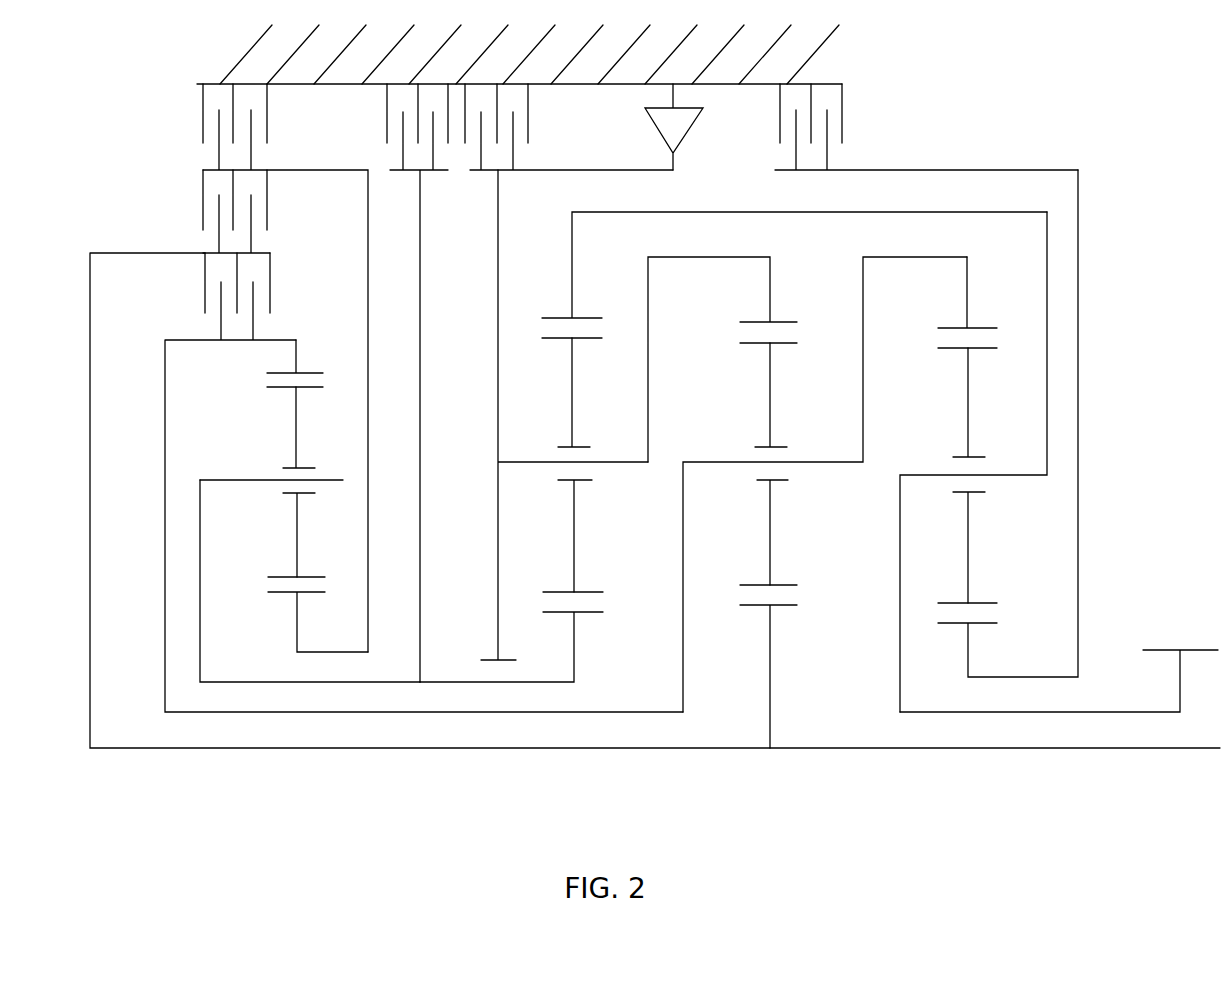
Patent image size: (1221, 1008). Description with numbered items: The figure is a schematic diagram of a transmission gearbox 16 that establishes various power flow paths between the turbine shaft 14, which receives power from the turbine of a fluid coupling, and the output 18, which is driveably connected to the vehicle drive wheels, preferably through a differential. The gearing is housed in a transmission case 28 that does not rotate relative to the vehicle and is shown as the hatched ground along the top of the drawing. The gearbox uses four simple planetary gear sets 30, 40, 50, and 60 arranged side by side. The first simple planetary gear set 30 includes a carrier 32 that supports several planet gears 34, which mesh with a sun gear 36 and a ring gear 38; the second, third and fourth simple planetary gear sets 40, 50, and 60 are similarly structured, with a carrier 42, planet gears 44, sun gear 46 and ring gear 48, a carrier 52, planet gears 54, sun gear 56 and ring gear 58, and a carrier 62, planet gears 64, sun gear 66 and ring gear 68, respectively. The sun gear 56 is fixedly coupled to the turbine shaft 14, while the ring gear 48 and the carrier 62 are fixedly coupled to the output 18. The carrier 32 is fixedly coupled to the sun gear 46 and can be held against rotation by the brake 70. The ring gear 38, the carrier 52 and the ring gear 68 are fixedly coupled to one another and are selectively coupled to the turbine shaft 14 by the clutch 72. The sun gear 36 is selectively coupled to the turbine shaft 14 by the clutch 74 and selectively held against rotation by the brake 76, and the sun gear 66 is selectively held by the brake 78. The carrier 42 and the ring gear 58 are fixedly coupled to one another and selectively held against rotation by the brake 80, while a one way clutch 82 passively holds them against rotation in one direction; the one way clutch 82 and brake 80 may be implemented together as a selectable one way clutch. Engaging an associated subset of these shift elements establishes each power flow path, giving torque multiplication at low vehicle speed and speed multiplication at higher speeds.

The turbine shaft 14 is at (1087, 748).
The gearbox 16 is at (1088, 110).
The output 18 is at (1160, 650).
The transmission case 28 is at (830, 35).
The simple planetary gear set 30 is at (302, 513).
The carrier 32 is at (198, 493).
The planet gears 34 is at (297, 440).
The sun gear 36 is at (298, 618).
The ring gear 38 is at (297, 358).
The simple planetary gear set 40 is at (733, 488).
The carrier 42 is at (496, 366).
The planet gears 44 is at (577, 397).
The sun gear 46 is at (580, 648).
The ring gear 48 is at (572, 266).
The simple planetary gear set 50 is at (807, 516).
The carrier 52 is at (863, 303).
The planet gears 54 is at (773, 413).
The sun gear 56 is at (770, 657).
The ring gear 58 is at (770, 292).
The simple planetary gear set 60 is at (961, 485).
The carrier 62 is at (898, 615).
The planet gears 64 is at (970, 410).
The sun gear 66 is at (972, 650).
The ring gear 68 is at (967, 280).
The brake 70 is at (387, 117).
The clutch 72 is at (203, 290).
The clutch 74 is at (203, 205).
The brake 76 is at (202, 125).
The brake 78 is at (843, 118).
The brake 80 is at (533, 120).
The one way clutch 82 is at (688, 130).